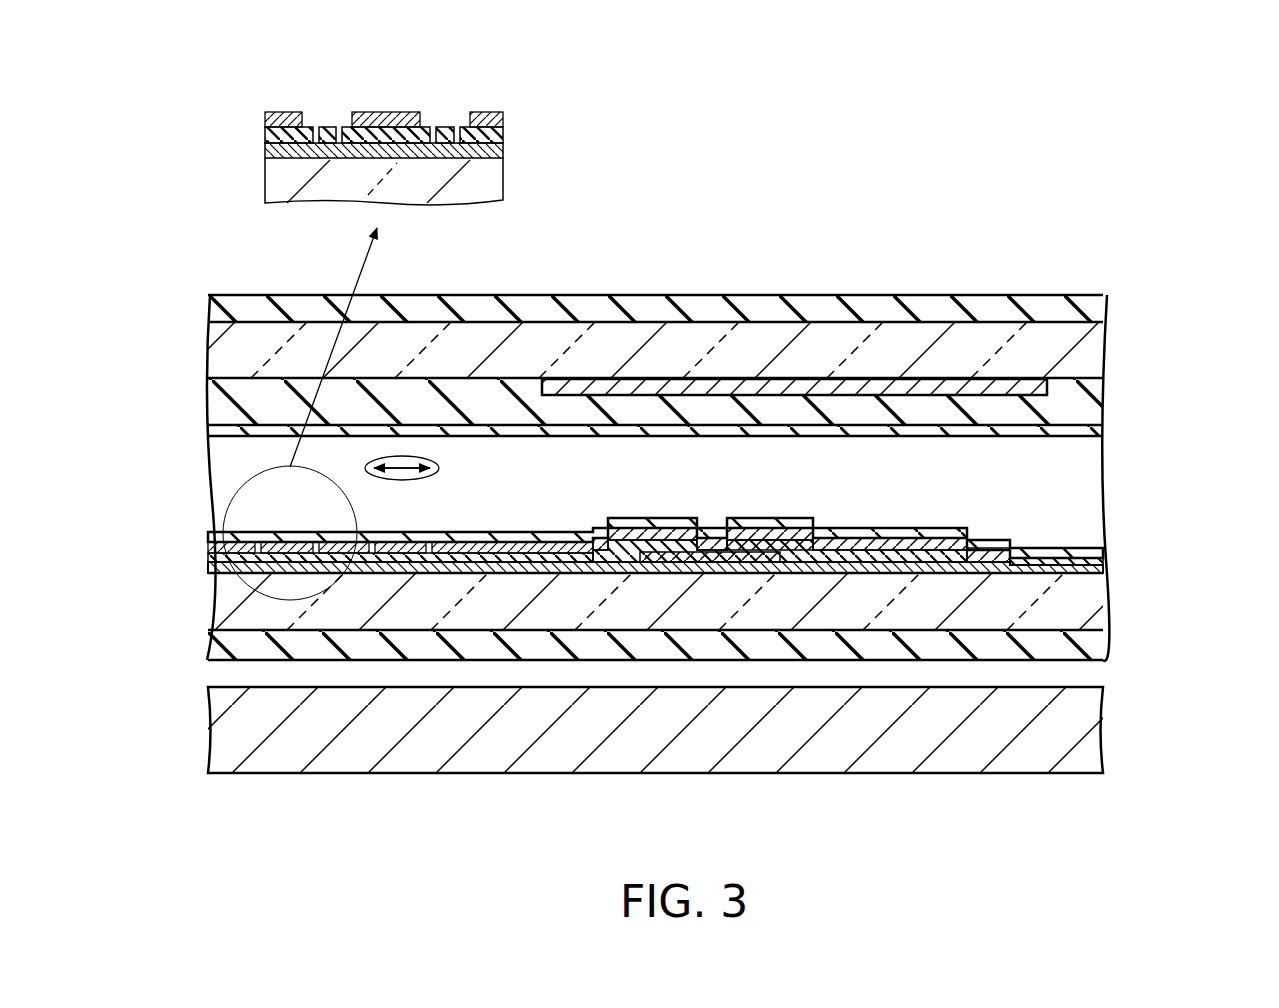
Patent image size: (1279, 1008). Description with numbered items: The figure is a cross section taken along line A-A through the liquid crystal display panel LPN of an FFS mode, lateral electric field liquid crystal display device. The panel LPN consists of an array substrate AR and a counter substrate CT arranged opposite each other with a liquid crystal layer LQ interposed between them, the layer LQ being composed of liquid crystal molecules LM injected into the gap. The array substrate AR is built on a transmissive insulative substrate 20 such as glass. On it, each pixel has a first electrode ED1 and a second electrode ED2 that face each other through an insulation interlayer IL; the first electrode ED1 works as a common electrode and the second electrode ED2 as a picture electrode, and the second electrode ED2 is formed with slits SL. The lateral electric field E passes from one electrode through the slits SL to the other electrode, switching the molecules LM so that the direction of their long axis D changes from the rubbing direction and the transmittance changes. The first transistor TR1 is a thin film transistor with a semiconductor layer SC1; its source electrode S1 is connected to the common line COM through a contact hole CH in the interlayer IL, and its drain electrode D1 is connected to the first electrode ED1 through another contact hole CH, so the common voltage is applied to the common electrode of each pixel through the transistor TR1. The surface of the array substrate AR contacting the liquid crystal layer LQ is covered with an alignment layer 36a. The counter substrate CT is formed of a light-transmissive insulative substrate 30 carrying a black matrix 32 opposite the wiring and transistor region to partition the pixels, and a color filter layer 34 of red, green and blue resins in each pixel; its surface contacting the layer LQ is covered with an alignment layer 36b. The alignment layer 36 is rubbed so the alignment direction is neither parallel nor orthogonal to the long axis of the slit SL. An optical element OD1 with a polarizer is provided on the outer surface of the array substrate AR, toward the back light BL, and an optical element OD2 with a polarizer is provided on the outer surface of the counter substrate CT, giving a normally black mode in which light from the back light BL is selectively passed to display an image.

The insulative substrate 30 is at (225, 345).
The color filter layer 34 is at (225, 395).
The black matrix 32 is at (630, 388).
The alignment layer 36 is at (140, 436).
The alignment layer 36a is at (212, 536).
The alignment layer 36b is at (215, 433).
The insulative substrate 20 is at (225, 600).
The optical element OD1 is at (1105, 637).
The optical element OD2 is at (1107, 303).
The backlight BL is at (1105, 725).
The counter substrate CT is at (1113, 322).
The array substrate AR is at (1113, 552).
The liquid crystal layer LQ is at (1113, 437).
The liquid crystal display panel LPN is at (1200, 322).
The first electrode ED1 is at (215, 568).
The second electrode ED2 is at (213, 548).
The insulation interlayer IL is at (213, 558).
The slit SL is at (258, 540).
The lateral electric field E is at (488, 102).
The long axis D is at (375, 464).
The liquid crystal molecules LM is at (440, 468).
The contact hole CH is at (530, 555).
The drain electrode D1 is at (655, 530).
The semiconductor layer SC1 is at (717, 543).
The source electrode S1 is at (800, 545).
The common line COM is at (1000, 548).
The first transistor TR1 is at (712, 586).
The line A- A is at (652, 668).